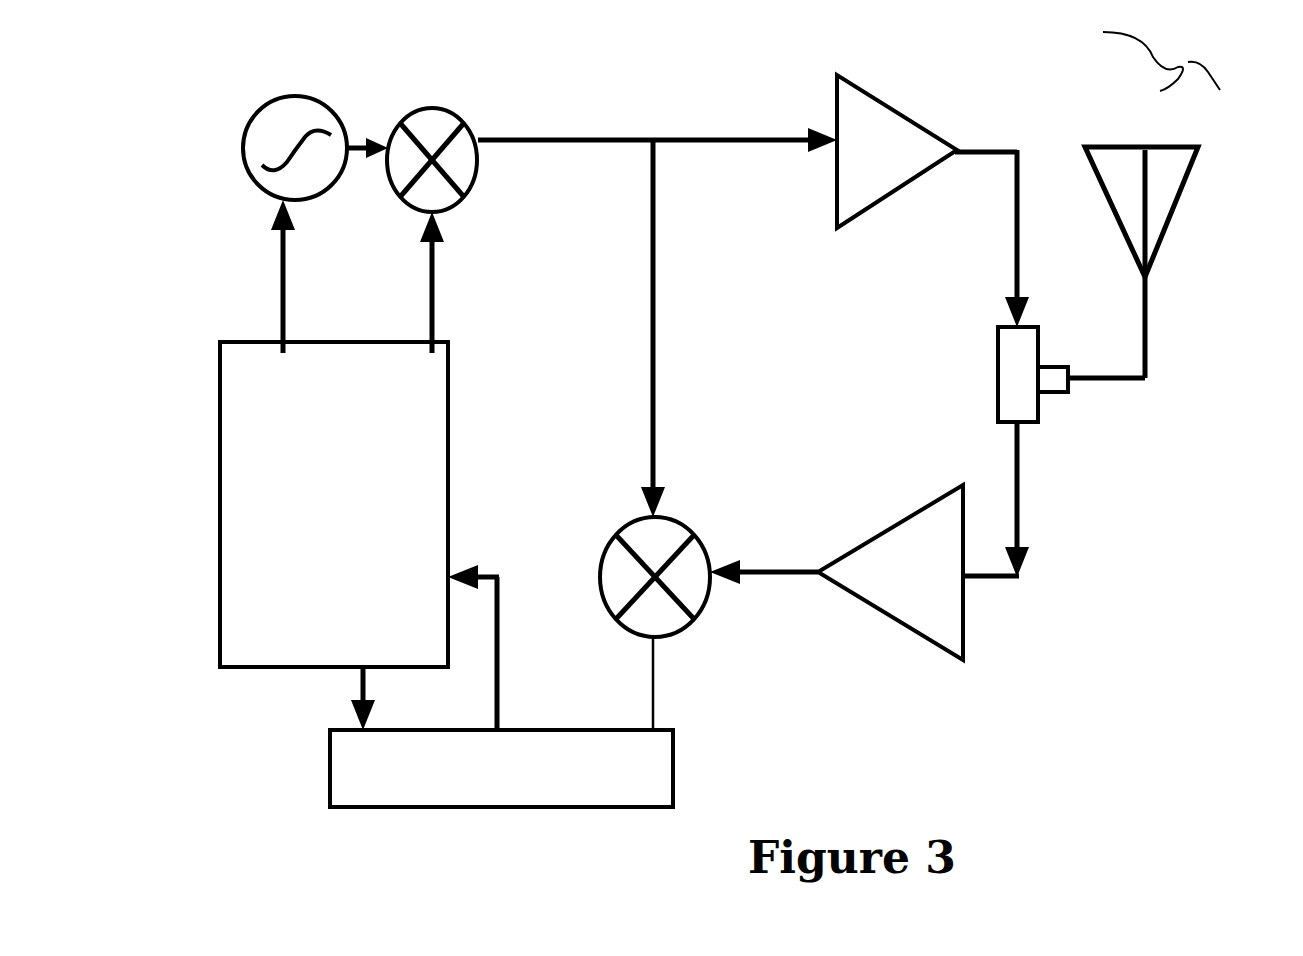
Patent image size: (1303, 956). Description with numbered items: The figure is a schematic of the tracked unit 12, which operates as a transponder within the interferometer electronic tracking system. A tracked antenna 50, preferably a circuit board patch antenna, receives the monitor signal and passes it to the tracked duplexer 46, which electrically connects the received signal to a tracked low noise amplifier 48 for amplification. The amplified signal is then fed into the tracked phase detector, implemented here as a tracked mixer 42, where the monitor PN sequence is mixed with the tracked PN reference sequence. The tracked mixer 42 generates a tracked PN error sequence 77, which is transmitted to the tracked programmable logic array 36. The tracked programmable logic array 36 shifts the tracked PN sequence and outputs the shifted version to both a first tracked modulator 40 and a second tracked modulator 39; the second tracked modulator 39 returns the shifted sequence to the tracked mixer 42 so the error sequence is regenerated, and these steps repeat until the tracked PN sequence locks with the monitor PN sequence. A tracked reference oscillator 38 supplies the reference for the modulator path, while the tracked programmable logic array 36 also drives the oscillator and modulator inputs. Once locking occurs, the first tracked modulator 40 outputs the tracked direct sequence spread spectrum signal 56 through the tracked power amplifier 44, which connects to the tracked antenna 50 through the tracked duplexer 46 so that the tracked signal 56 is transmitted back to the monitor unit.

The tracked unit 12 is at (232, 128).
The tracked programmable logic array 36 is at (258, 522).
The tracked reference oscillator 38 is at (288, 125).
The second tracked modulator 39 is at (645, 772).
The first tracked modulator 40 is at (430, 127).
The tracked mixer 42 is at (655, 537).
The tracked power amplifier 44 is at (877, 125).
The tracked duplexer 46 is at (1022, 395).
The tracked low noise amplifier 48 is at (897, 618).
The tracked antenna 50 is at (1185, 180).
The tracked direct sequence spread spectrum signal 56 is at (1133, 56).
The tracked PN error sequence 77 is at (655, 683).